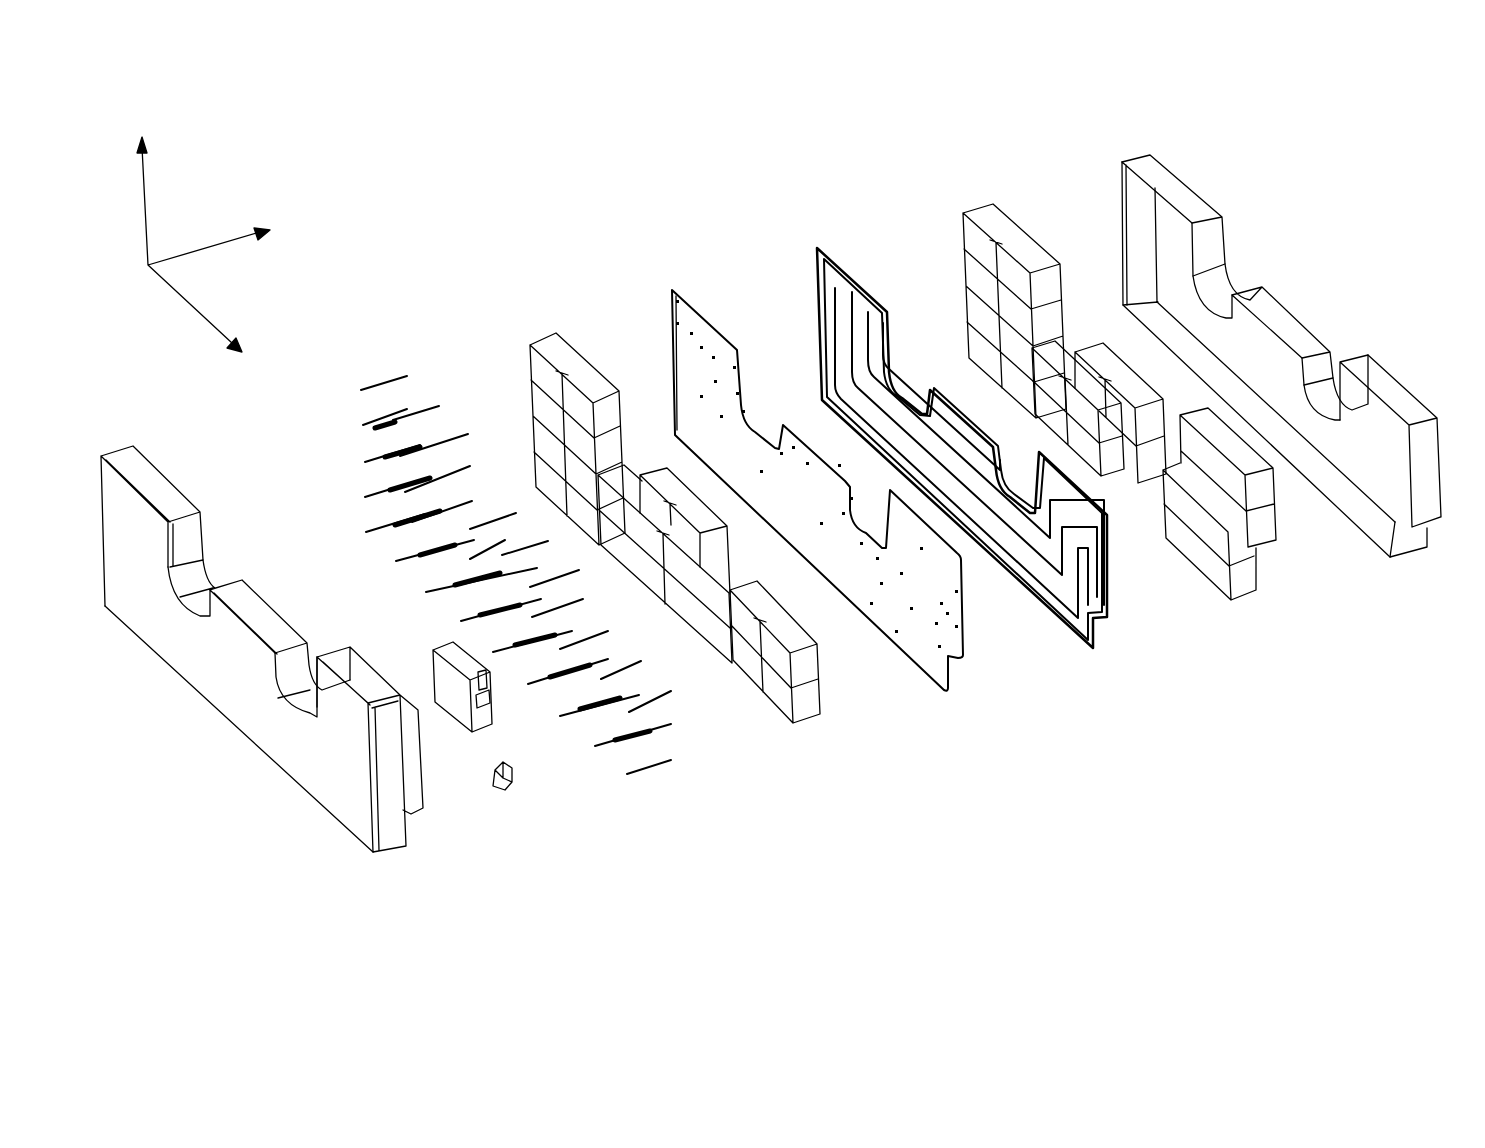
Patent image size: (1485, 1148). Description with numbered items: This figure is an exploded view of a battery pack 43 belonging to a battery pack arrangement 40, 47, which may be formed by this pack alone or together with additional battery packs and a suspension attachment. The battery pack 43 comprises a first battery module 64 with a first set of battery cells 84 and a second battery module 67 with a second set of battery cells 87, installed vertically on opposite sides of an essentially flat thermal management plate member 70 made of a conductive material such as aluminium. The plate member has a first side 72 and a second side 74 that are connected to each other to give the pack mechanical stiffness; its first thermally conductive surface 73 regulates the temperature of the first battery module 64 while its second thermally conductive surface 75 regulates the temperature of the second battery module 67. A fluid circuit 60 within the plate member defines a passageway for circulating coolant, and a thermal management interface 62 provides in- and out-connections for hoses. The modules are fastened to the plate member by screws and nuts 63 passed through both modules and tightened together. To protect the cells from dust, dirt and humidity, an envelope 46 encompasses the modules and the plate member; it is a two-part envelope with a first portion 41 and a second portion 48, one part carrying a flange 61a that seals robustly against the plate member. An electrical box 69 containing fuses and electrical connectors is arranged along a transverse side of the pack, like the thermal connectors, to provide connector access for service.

The connector assembly 40 is at (785, 506).
The battery pack 43 is at (785, 506).
The terminal module 47 is at (497, 143).
The first portion 41 is at (785, 622).
The envelope 46 is at (153, 486).
The second portion 48 is at (1383, 477).
The fluid circuit 60 is at (830, 280).
The flange 61a is at (407, 765).
The thermal management interface 62 is at (513, 783).
The screws and nuts 63 is at (650, 767).
The first battery module 64 is at (810, 707).
The second battery module 67 is at (1237, 583).
The electrical box 69 is at (488, 728).
The thermal management plate member 70 is at (670, 308).
The first side of the thermal management plate member 72 is at (678, 323).
The first thermally conductive surface 73 is at (683, 353).
The second side of the thermal management plate member 74 is at (847, 270).
The second thermally conductive surface 75 is at (867, 293).
The first set of battery cells 84 is at (718, 640).
The second set of battery cells 87 is at (1182, 540).